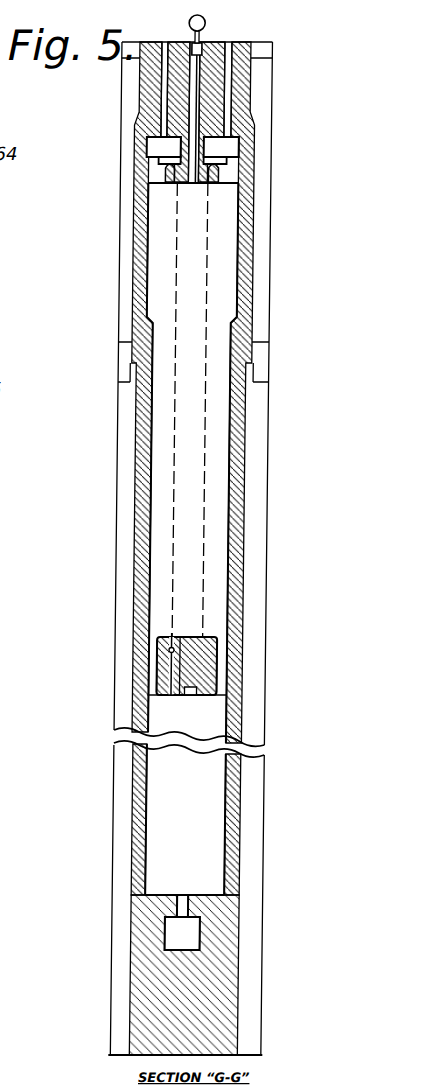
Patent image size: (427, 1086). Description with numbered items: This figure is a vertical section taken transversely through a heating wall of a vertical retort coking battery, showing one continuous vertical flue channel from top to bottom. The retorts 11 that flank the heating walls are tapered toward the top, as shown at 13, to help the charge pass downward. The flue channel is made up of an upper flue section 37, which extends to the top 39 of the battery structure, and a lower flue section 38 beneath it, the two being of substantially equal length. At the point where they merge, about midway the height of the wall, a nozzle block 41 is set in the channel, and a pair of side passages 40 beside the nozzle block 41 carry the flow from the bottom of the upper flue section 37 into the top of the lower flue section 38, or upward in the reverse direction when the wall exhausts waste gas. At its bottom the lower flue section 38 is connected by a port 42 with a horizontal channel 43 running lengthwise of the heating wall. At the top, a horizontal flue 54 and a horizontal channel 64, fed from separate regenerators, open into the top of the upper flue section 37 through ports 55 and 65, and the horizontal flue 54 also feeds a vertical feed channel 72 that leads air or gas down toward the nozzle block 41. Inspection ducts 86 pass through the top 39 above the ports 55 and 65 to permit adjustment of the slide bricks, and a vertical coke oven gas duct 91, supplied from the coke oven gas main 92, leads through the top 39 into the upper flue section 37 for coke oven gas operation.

The retort 11 is at (134, 535).
The tapered portion of retort 13 is at (135, 275).
The top of battery structure 39 is at (238, 92).
The inspection duct 86 is at (166, 88).
The horizontal flue 54 is at (153, 147).
The horizontal channel 64 is at (241, 142).
The port 55 is at (166, 172).
The port 65 is at (224, 170).
The vertical coke oven gas duct 91 is at (195, 42).
The coke oven gas main 92 is at (206, 25).
The vertical feed channel 72 is at (192, 408).
The upper flue section 37 is at (192, 577).
The lower flue section 38 is at (194, 780).
The nozzle block 41 is at (209, 660).
The passage 40 is at (225, 668).
The port 42 is at (192, 907).
The horizontal channel 43 is at (185, 933).